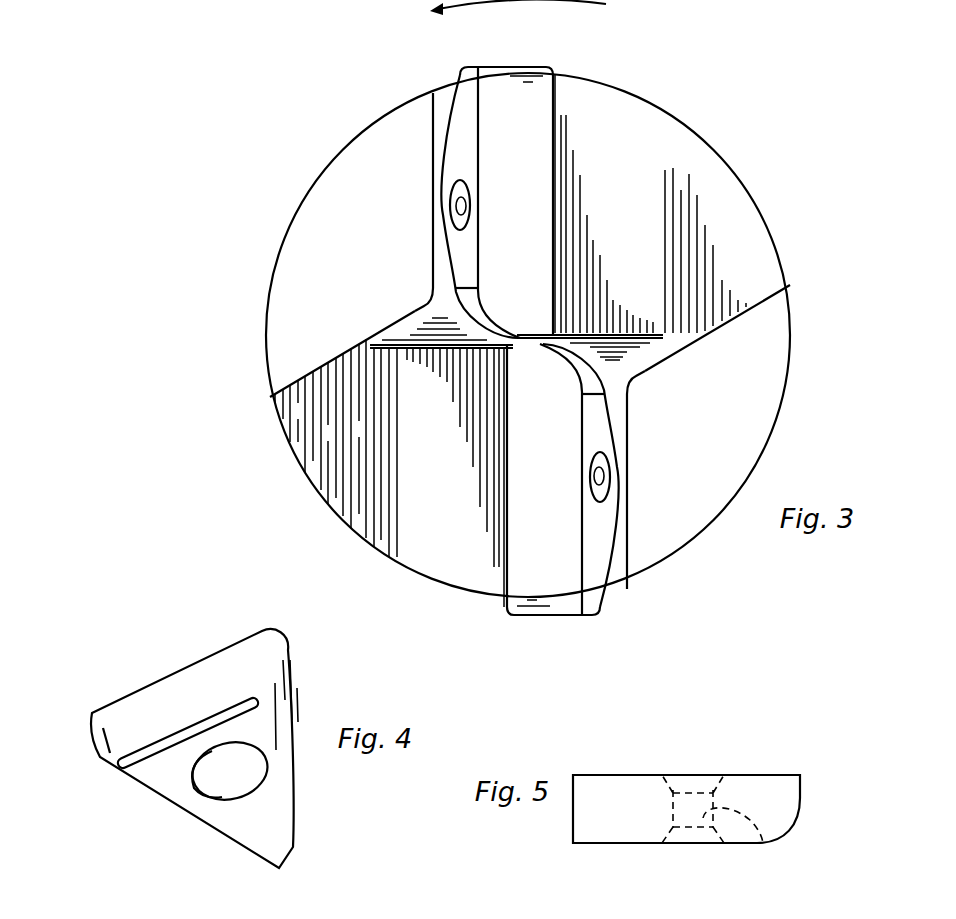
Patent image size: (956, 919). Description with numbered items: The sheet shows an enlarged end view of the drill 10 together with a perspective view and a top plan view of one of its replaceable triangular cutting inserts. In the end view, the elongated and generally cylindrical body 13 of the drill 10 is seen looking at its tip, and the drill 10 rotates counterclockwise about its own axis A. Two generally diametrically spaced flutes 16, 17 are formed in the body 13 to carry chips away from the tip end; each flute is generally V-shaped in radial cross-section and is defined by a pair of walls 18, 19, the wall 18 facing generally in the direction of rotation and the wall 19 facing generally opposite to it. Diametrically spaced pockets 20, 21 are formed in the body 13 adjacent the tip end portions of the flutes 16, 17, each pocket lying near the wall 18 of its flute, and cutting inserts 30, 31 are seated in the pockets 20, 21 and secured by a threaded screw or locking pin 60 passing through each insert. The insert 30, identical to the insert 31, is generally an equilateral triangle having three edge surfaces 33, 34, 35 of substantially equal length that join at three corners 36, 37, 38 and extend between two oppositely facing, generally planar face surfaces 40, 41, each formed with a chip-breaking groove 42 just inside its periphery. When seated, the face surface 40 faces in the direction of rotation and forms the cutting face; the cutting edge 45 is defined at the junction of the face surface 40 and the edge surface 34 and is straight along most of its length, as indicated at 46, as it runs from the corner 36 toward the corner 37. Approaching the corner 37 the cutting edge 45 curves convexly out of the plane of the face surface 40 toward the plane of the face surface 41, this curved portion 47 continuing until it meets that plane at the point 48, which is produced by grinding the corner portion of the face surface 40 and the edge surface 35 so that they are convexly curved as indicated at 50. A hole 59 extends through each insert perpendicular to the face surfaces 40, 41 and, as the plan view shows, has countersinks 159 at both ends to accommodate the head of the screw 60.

In FIG. 3, the drill 10 is at (248, 408).
In FIG. 3, the body 13 is at (672, 128).
In FIG. 3, the flute 16 is at (305, 283).
In FIG. 3, the flute 17 is at (727, 420).
In FIG. 3, the wall 18 is at (433, 191).
In FIG. 3, the wall 19 is at (328, 360).
In FIG. 3, the pocket 20 is at (538, 222).
In FIG. 3, the pocket 21 is at (508, 512).
In FIG. 3, the cutting insert 30 is at (451, 126).
In FIG. 4, the cutting insert 30 is at (198, 724).
In FIG. 5, the cutting insert 30 is at (685, 787).
In FIG. 3, the cutting insert 31 is at (597, 573).
In FIG. 4, the edge surface 33 is at (205, 845).
In FIG. 3, the edge surface 34 is at (530, 140).
In FIG. 4, the edge surface 34 is at (185, 680).
In FIG. 5, the edge surface 34 is at (742, 785).
In FIG. 4, the edge surface 35 is at (295, 808).
In FIG. 3, the corner 36 is at (508, 63).
In FIG. 4, the corner 36 is at (97, 751).
In FIG. 4, the corner 37 is at (268, 637).
In FIG. 4, the corner 38 is at (280, 868).
In FIG. 3, the face surface 40 is at (457, 267).
In FIG. 4, the face surface 40 is at (248, 832).
In FIG. 4, the face surface 41 is at (125, 697).
In FIG. 5, the face surface 41 is at (637, 773).
In FIG. 4, the chip-breaking groove 42 is at (212, 718).
In FIG. 3, the cutting edge 45 is at (483, 228).
In FIG. 4, the cutting edge 45 is at (181, 724).
In FIG. 5, the cutting edge 45 is at (629, 843).
In FIG. 3, the straight portion 46 is at (480, 197).
In FIG. 4, the straight portion 46 is at (215, 718).
In FIG. 5, the straight portion 46 is at (592, 843).
In FIG. 3, the curved portion 47 is at (492, 308).
In FIG. 4, the curved portion 47 is at (290, 660).
In FIG. 5, the curved portion 47 is at (792, 822).
In FIG. 5, the point 48 is at (800, 777).
In FIG. 3, the convexly curved corner portion 50 is at (577, 360).
In FIG. 4, the convexly curved corner portion 50 is at (300, 692).
In FIG. 4, the hole 59 is at (193, 777).
In FIG. 5, the hole 59 is at (757, 833).
In FIG. 3, the screw 60 is at (460, 217).
In FIG. 5, the countersink 159 is at (690, 775).
In FIG. 3, the axis A is at (530, 342).